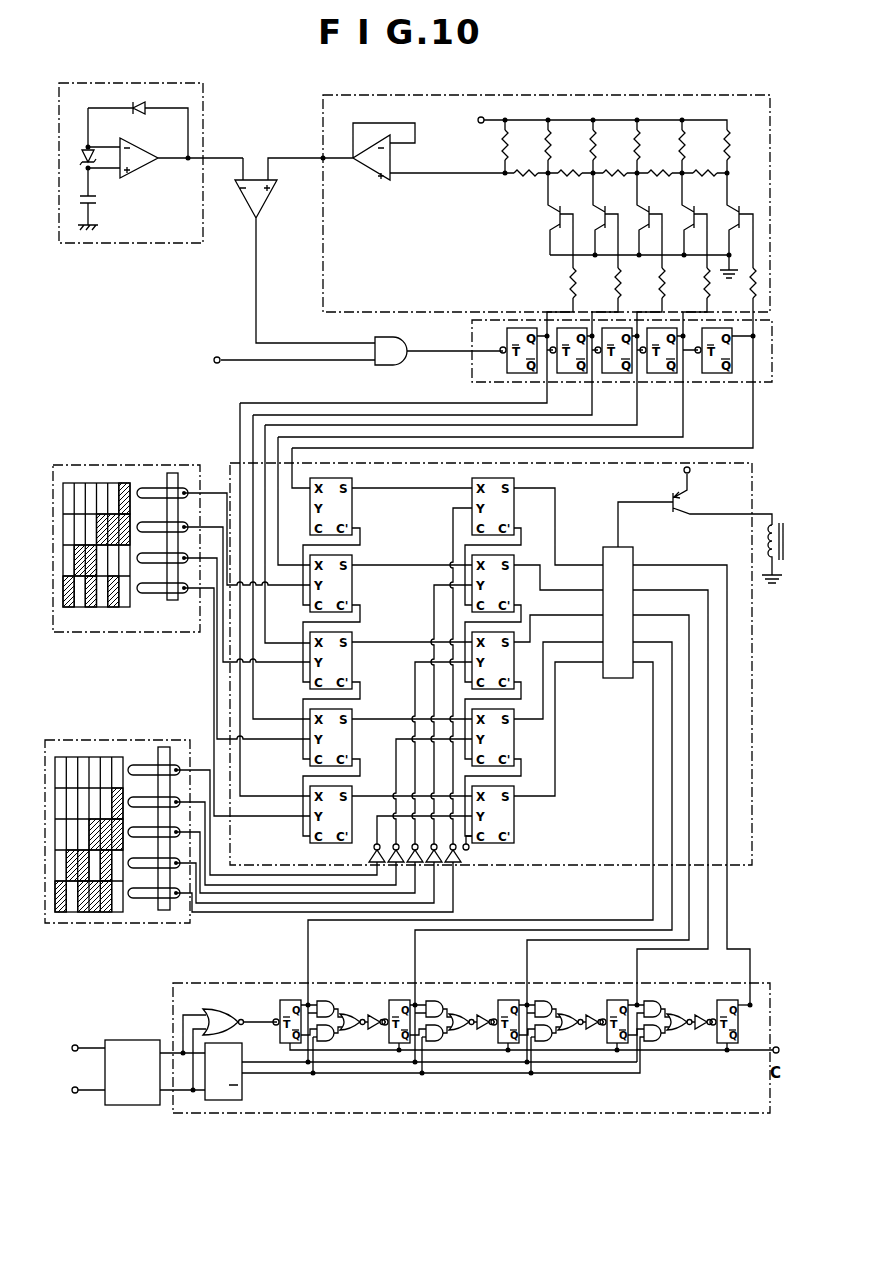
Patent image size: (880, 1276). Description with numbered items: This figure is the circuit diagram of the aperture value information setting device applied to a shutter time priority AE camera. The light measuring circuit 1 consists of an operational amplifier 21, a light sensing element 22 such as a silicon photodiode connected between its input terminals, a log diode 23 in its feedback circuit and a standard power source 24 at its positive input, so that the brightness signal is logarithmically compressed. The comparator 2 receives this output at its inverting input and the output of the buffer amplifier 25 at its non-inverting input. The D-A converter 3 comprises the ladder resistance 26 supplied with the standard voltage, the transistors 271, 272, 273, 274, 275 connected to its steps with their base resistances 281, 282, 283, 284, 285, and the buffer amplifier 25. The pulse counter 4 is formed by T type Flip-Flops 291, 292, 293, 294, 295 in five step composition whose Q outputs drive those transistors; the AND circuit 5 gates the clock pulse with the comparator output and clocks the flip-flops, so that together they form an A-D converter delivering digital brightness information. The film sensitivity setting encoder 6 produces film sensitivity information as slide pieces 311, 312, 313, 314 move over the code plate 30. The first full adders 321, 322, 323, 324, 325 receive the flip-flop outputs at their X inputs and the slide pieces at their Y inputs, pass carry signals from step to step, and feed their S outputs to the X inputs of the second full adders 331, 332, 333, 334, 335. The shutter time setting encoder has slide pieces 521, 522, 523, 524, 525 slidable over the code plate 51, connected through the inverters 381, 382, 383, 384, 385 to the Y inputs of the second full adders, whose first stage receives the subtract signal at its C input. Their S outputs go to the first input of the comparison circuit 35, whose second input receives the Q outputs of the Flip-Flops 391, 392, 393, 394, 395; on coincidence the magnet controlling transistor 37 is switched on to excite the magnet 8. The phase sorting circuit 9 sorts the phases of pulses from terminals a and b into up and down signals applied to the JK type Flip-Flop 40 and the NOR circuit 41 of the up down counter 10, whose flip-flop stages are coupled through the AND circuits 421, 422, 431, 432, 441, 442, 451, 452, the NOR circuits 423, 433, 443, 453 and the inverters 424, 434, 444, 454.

The light measuring circuit 1 is at (183, 92).
The comparator 2 is at (271, 197).
The D-A converter 3 is at (524, 94).
The pulse counter 4 is at (470, 366).
The AND circuit 5 is at (347, 353).
The film sensitivity setting encoder 6 is at (147, 464).
The shutter driving magnet 8 is at (766, 532).
The phase sorting circuit 9 is at (133, 1073).
The up down counter 10 is at (708, 1113).
The operational amplifier 21 is at (134, 153).
The light sensing element 22 is at (85, 152).
The log diode 23 is at (144, 105).
The standard power source 24 is at (94, 202).
The buffer amplifier 25 is at (374, 178).
The ladder resistance 26 is at (625, 113).
The transistor 271 is at (556, 213).
The transistor 272 is at (601, 214).
The transistor 273 is at (645, 214).
The transistor 274 is at (690, 214).
The transistor 275 is at (735, 214).
The base resistance 281 is at (570, 285).
The base resistance 282 is at (615, 285).
The base resistance 283 is at (659, 285).
The base resistance 284 is at (704, 285).
The base resistance 285 is at (750, 290).
The T type Flip-Flop 291 is at (507, 362).
The T type Flip-Flop 292 is at (570, 373).
The T type Flip-Flop 293 is at (615, 373).
The T type Flip-Flop 294 is at (660, 373).
The T type Flip-Flop 295 is at (715, 373).
The code plate 30 is at (80, 483).
The slide piece 311 is at (158, 593).
The slide piece 312 is at (150, 565).
The slide piece 313 is at (152, 525).
The slide piece 314 is at (152, 491).
The first full adder 321 is at (310, 831).
The first full adder 322 is at (310, 751).
The first full adder 323 is at (352, 661).
The first full adder 324 is at (358, 583).
The first full adder 325 is at (352, 506).
The second full adder 331 is at (514, 813).
The second full adder 332 is at (514, 733).
The second full adder 333 is at (472, 648).
The second full adder 334 is at (472, 576).
The second full adder 335 is at (472, 496).
The comparison circuit 35 is at (529, 753).
The magnet controlling transistor 37 is at (668, 512).
The inverter 381 is at (369, 857).
The inverter 382 is at (396, 845).
The inverter 383 is at (415, 866).
The inverter 384 is at (437, 866).
The inverter 385 is at (455, 866).
The T type Flip-Flop 391 is at (286, 1000).
The T type Flip-Flop 392 is at (396, 1000).
The T type Flip-Flop 393 is at (505, 1000).
The T type Flip-Flop 394 is at (614, 1000).
The T type Flip-Flop 395 is at (724, 1000).
The JK type Flip-Flop 40 is at (243, 1085).
The NOR circuit 41 is at (220, 1016).
The AND circuit 421 is at (326, 1001).
The AND circuit 422 is at (333, 1041).
The NOR circuit 423 is at (351, 1014).
The inverter 424 is at (375, 1030).
The AND circuit 431 is at (435, 1001).
The AND circuit 432 is at (442, 1041).
The NOR circuit 433 is at (460, 1014).
The inverter 434 is at (484, 1030).
The AND circuit 441 is at (544, 1001).
The AND circuit 442 is at (551, 1041).
The NOR circuit 443 is at (569, 1014).
The inverter 444 is at (593, 1030).
The AND circuit 451 is at (653, 1001).
The AND circuit 452 is at (658, 1041).
The NOR circuit 453 is at (678, 1014).
The inverter 454 is at (703, 1030).
The code plate 51 is at (82, 757).
The slide piece 521 is at (142, 768).
The slide piece 522 is at (142, 800).
The slide piece 523 is at (142, 830).
The slide piece 524 is at (142, 861).
The slide piece 525 is at (142, 891).